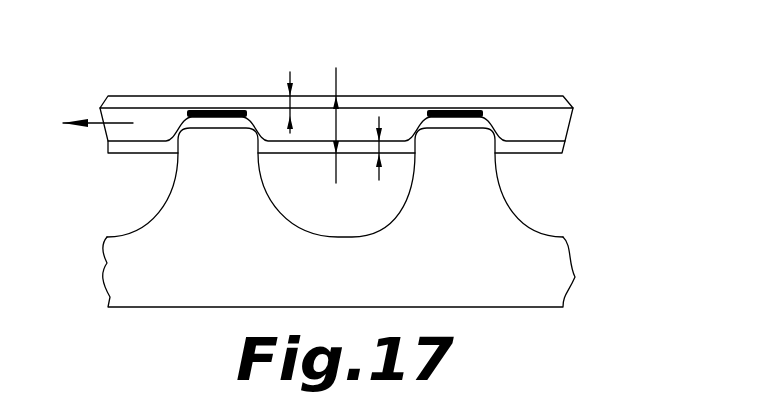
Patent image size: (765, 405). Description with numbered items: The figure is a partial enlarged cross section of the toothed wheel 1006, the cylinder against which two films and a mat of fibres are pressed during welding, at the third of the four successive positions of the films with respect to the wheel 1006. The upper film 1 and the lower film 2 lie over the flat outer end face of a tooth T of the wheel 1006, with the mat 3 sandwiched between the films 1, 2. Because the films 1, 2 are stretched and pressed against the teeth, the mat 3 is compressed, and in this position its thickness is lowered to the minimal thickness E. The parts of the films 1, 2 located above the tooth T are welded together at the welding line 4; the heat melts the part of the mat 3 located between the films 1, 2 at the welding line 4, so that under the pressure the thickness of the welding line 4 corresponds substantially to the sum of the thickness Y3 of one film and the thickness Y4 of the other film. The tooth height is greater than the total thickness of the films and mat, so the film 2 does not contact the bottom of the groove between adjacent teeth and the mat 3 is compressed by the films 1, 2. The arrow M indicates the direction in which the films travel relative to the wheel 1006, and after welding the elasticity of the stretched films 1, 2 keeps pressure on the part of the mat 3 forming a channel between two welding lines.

The film 1 is at (525, 100).
The film 2 is at (455, 122).
The mat 3 is at (562, 122).
The welding line 4 is at (220, 109).
The wheel 1006 is at (480, 292).
The tooth T is at (480, 163).
The belt running direction M is at (87, 120).
The minimal thickness E is at (338, 80).
The thickness of film Y3 is at (292, 70).
The thickness of film Y4 is at (379, 180).